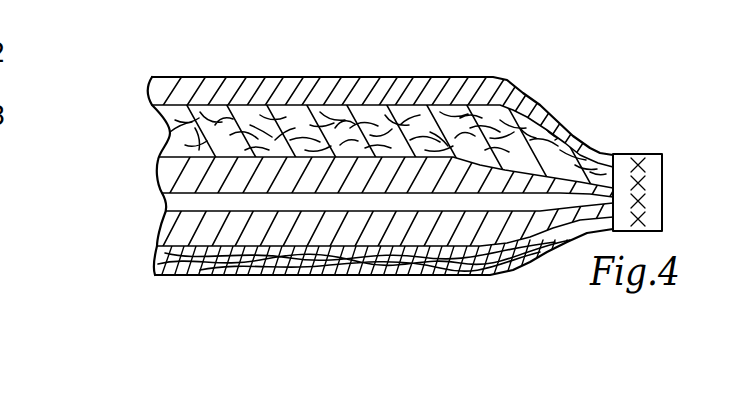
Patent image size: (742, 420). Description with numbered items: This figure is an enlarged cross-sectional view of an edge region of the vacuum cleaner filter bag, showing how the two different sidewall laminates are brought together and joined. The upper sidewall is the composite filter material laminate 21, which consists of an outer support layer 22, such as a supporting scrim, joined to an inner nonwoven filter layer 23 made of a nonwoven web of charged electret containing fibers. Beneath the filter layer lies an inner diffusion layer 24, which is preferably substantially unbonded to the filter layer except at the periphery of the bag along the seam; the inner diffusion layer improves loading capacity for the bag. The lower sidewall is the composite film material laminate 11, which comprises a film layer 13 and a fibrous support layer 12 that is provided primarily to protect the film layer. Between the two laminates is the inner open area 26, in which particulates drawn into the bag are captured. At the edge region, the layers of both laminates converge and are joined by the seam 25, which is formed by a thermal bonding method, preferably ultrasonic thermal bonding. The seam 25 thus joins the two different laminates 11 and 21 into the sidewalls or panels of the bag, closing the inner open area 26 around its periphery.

The composite film material laminate 11 is at (356, 183).
The fibrous support layer 12 is at (160, 267).
The film layer 13 is at (187, 230).
The inner open area 26 is at (187, 202).
The inner diffusion layer 24 is at (170, 173).
The inner nonwoven filter layer 23 is at (178, 132).
The outer support layer 22 is at (163, 93).
The composite filter material laminate 21 is at (359, 155).
The seam 25 is at (645, 172).